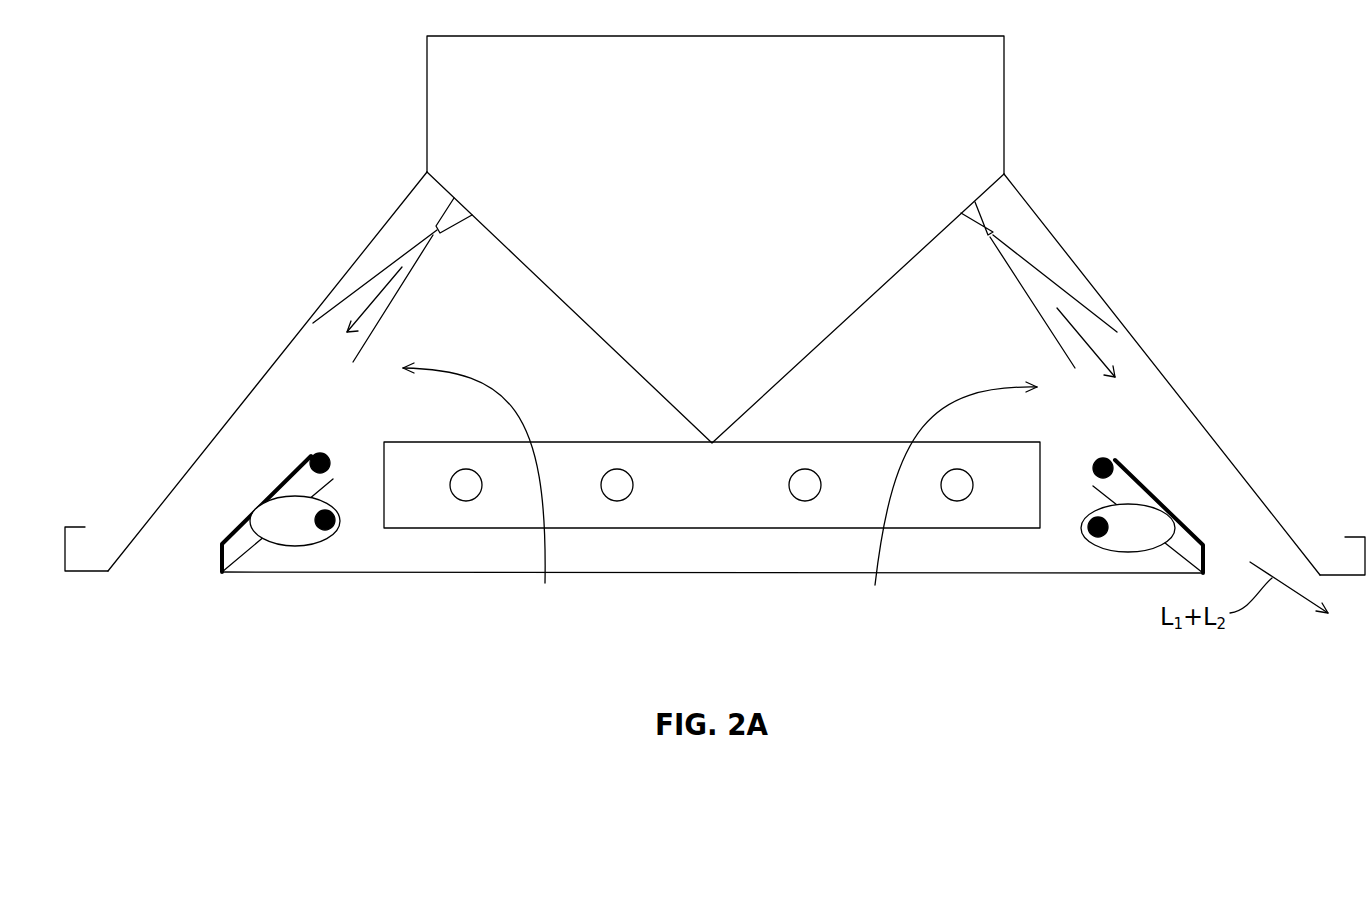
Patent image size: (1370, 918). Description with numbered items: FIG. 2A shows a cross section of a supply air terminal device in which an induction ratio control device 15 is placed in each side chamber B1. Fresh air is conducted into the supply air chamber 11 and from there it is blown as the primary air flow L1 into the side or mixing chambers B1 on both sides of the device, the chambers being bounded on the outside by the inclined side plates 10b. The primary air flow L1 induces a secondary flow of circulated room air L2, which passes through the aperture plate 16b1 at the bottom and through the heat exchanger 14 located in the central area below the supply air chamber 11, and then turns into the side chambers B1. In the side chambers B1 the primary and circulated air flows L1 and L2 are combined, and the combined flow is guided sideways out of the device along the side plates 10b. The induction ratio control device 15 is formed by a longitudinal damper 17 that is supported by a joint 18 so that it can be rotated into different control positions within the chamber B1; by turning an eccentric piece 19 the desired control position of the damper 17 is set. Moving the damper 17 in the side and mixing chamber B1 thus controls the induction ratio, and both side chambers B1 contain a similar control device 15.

The side plate 10b is at (267, 368).
The supply air chamber 11 is at (747, 218).
The heat exchanger 14 is at (833, 456).
The induction ratio control device 15 is at (1195, 457).
The aperture plate 16b1 is at (466, 575).
The longitudinal damper 17 is at (1160, 500).
The joint 18 is at (1103, 456).
The eccentric piece 19 is at (1122, 546).
The primary air flow L1 is at (375, 297).
The circulated air flow L2 is at (457, 367).
The side chamber B1 is at (272, 459).